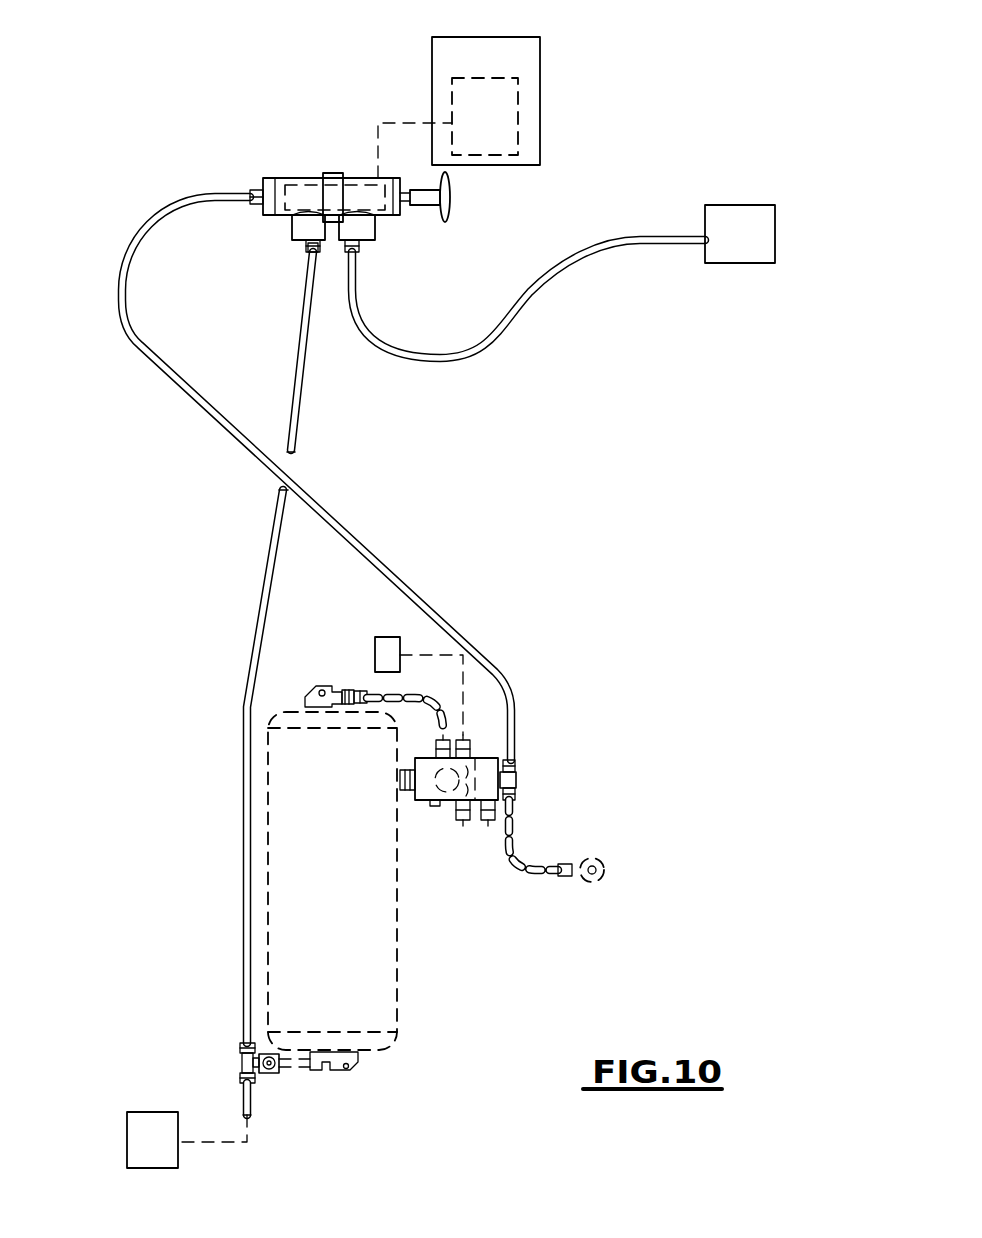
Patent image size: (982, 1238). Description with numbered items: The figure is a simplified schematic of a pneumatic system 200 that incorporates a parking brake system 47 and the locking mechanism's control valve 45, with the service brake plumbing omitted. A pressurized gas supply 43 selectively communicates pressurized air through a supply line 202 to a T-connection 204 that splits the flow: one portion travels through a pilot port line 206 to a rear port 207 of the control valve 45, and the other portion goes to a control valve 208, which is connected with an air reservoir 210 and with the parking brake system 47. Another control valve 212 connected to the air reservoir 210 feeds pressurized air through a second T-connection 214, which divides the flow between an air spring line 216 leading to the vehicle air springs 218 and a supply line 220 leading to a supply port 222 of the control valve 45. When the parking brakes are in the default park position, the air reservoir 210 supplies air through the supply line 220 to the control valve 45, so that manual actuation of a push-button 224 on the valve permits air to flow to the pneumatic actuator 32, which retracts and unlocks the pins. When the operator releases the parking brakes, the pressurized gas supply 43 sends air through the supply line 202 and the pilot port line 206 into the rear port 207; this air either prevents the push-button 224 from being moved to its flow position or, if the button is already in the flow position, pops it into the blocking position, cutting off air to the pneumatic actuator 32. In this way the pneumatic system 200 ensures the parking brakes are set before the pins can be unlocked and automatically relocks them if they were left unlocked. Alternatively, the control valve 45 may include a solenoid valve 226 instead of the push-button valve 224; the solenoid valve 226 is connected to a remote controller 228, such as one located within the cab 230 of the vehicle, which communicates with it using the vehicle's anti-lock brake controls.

The pneumatic actuator 32 is at (775, 232).
The pressurized gas supply 43 is at (590, 883).
The control valve 45 is at (322, 165).
The parking brake system 47 is at (375, 655).
The pneumatic system 200 is at (472, 580).
The supply line 202 is at (516, 832).
The T-connection 204 is at (516, 778).
The pilot port line 206 is at (348, 517).
The rear port 207 is at (257, 204).
The control valve 208 is at (427, 802).
The air reservoir 210 is at (400, 1013).
The control valve 212 is at (280, 1074).
The T-connection 214 is at (240, 1063).
The air spring line 216 is at (255, 1100).
The vehicle air springs 218 is at (127, 1130).
The supply line 220 is at (253, 618).
The supply port 222 is at (307, 247).
The push-button 224 is at (450, 192).
The solenoid valve 226 is at (353, 177).
The remote controller 228 is at (478, 78).
The cab 230 is at (540, 62).